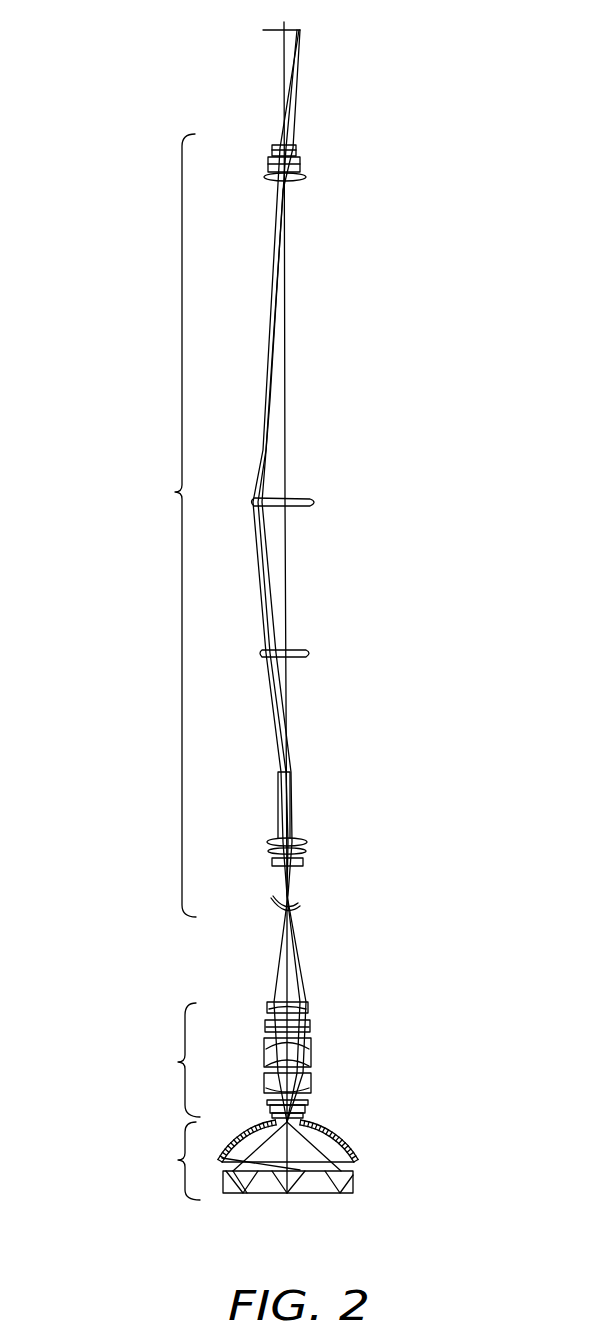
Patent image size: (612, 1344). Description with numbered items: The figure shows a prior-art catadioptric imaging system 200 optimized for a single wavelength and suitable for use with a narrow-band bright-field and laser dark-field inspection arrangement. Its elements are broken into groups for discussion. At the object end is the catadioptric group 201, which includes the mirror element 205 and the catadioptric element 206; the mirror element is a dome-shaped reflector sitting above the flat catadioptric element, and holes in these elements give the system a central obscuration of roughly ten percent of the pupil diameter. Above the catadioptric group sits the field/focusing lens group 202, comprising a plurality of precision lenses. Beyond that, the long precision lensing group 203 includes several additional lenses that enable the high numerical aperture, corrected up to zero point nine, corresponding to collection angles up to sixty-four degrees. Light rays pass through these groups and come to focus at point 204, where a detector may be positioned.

The catadioptric imaging system 200 is at (208, 78).
The catadioptric group 201 is at (178, 1160).
The field/focusing lens group 202 is at (178, 1062).
The precision lensing group 203 is at (175, 492).
The detector point 204 is at (306, 30).
The mirror element 205 is at (340, 1131).
The catadioptric element 206 is at (362, 1185).